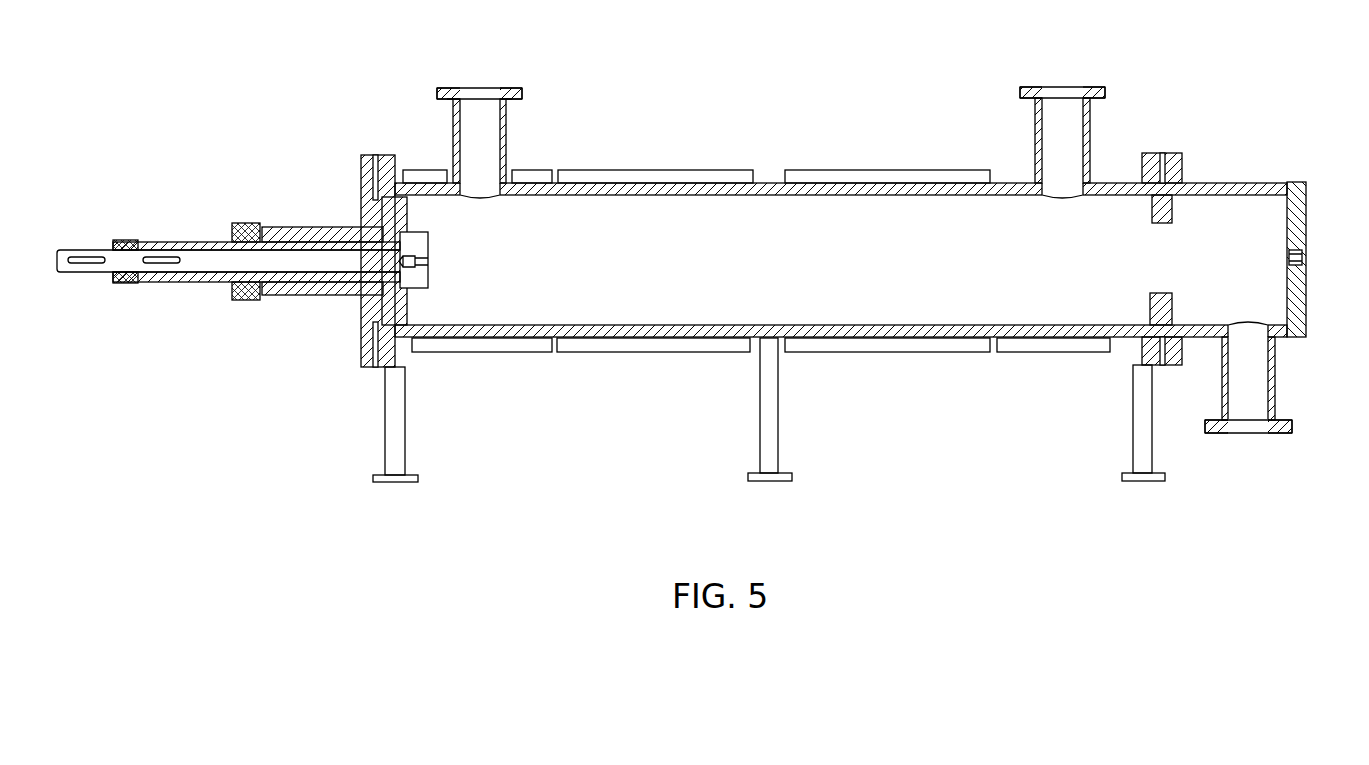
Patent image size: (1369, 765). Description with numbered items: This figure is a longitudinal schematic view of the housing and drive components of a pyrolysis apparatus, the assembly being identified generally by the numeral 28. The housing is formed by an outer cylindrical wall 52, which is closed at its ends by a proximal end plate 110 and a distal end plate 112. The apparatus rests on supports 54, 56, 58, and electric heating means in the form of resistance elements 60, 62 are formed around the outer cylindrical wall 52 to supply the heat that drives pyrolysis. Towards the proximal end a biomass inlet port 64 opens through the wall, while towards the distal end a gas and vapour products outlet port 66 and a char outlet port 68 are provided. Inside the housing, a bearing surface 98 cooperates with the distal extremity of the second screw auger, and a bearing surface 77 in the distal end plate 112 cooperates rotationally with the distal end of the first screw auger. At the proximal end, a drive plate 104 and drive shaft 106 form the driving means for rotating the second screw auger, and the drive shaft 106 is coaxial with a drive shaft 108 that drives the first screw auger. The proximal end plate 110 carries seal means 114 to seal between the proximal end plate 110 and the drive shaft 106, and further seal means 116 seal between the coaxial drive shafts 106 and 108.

The melt tank assembly 28 is at (481, 553).
The outer cylindrical wall 52 is at (1100, 183).
The support 54 is at (1133, 450).
The support 56 is at (780, 425).
The support 58 is at (405, 445).
The resistance element 60 is at (933, 170).
The resistance element 62 is at (663, 170).
The biomass inlet port 64 is at (453, 143).
The gas and vapour products outlet port 66 is at (1035, 135).
The char outlet port 68 is at (1275, 390).
The bearing surface 77 is at (1307, 242).
The bearing surface 98 is at (1168, 223).
The drive plate 104 is at (395, 213).
The drive shaft 106 is at (165, 241).
The drive shaft 108 is at (65, 276).
The proximal end plate 110 is at (360, 322).
The distal end plate 112 is at (1307, 205).
The seal means 114 is at (242, 223).
The seal means 116 is at (118, 243).